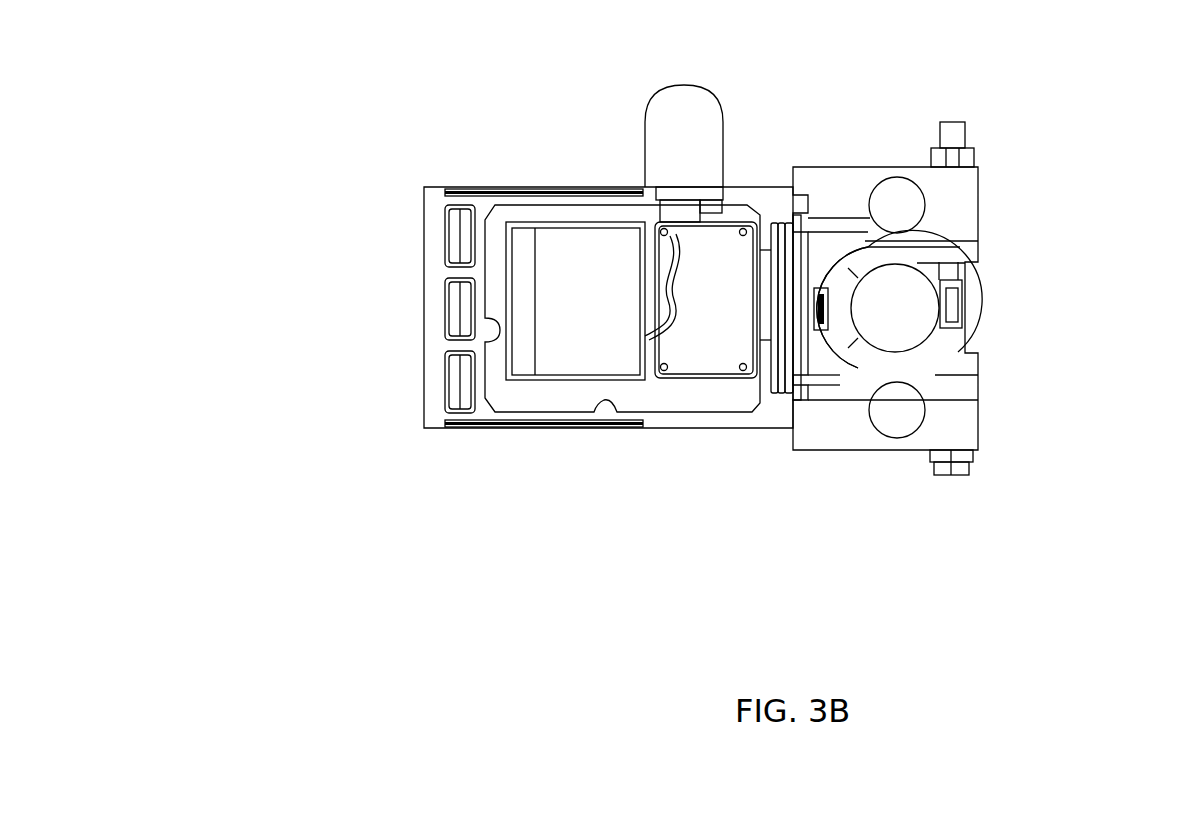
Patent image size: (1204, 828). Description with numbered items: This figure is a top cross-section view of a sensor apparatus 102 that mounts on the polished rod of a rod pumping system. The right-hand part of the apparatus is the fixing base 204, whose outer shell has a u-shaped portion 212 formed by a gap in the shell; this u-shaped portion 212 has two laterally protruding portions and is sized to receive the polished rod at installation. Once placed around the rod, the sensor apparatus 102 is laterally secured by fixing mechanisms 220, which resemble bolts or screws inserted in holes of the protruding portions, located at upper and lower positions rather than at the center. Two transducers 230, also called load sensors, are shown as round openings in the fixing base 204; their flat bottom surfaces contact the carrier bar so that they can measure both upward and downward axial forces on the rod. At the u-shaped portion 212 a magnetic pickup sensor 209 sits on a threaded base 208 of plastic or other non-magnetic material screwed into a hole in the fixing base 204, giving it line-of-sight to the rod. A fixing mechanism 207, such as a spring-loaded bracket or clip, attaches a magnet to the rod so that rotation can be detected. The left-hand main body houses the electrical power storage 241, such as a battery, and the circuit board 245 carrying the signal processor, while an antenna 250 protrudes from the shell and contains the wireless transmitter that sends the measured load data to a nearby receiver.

The sensor apparatus 102 is at (274, 446).
The fixing base 204 is at (878, 165).
The fixing mechanism 207 is at (956, 298).
The threaded base 208 is at (822, 292).
The magnetic pickup sensor 209 is at (782, 396).
The u-shaped portion 212 is at (868, 246).
The fixing mechanisms 220 is at (950, 478).
The transducers 230 is at (897, 205).
The electrical power storage 241 is at (568, 312).
The circuit board 245 is at (720, 312).
The antenna 250 is at (678, 100).